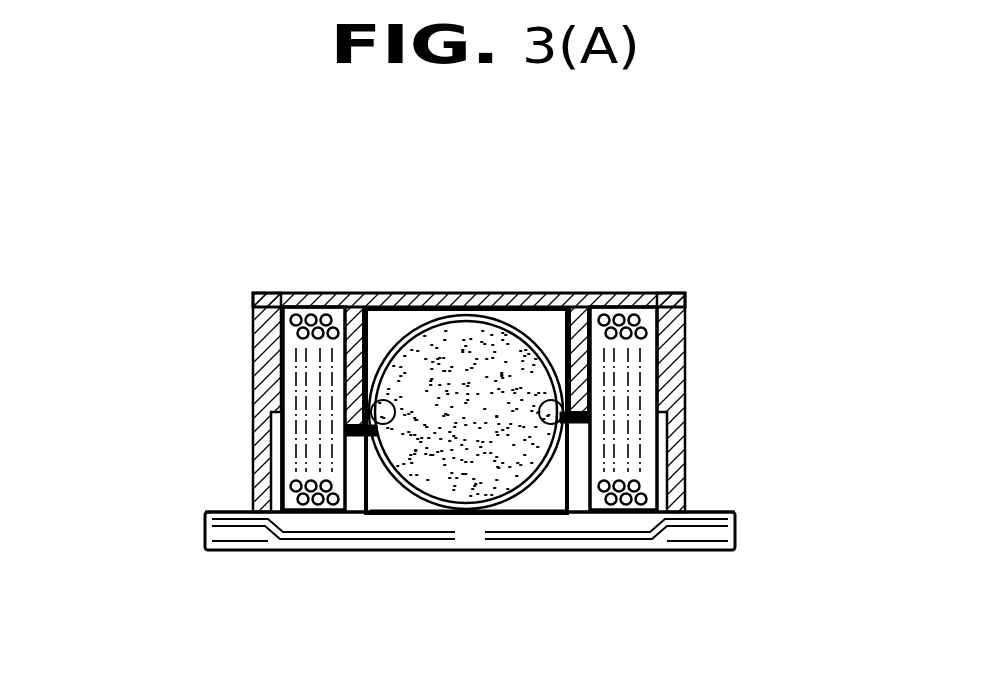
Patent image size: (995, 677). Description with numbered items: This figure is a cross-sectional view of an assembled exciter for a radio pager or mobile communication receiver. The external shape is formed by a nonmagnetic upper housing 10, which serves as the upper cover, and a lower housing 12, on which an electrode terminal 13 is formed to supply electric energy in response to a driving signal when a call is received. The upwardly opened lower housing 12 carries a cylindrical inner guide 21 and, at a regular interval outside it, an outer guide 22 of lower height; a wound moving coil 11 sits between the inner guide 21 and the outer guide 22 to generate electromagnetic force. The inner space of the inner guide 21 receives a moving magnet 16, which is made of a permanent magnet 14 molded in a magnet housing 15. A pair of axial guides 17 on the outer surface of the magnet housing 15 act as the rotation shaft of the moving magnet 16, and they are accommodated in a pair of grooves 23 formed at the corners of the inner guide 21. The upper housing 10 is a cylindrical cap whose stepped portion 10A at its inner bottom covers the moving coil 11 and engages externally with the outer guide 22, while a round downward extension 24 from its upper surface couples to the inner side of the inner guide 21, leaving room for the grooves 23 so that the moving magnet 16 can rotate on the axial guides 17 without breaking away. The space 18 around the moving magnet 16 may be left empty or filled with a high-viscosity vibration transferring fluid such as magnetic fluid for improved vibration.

The upper housing 10 is at (262, 355).
The stepped portion 10A is at (262, 437).
The moving coil 11 is at (289, 302).
The lower housing 12 is at (265, 548).
The electrode terminal 13 is at (507, 535).
The permanent magnet 14 is at (413, 325).
The magnet housing 15 is at (523, 323).
The moving magnet 16 is at (466, 315).
The axial guides 17 is at (585, 402).
The space 18 is at (390, 500).
The inner guide 21 is at (592, 310).
The outer guide 22 is at (683, 428).
The grooves 23 is at (383, 412).
The downward extension 24 is at (548, 330).